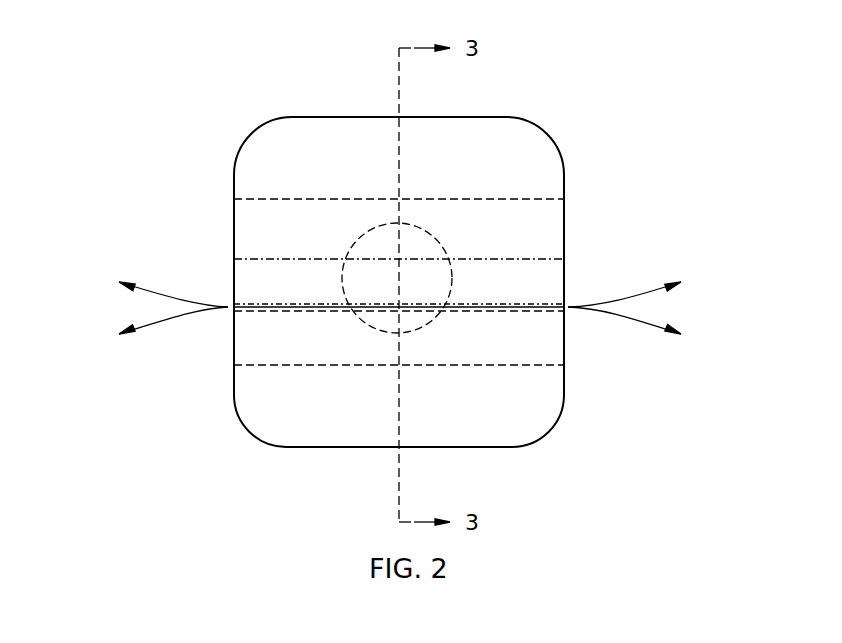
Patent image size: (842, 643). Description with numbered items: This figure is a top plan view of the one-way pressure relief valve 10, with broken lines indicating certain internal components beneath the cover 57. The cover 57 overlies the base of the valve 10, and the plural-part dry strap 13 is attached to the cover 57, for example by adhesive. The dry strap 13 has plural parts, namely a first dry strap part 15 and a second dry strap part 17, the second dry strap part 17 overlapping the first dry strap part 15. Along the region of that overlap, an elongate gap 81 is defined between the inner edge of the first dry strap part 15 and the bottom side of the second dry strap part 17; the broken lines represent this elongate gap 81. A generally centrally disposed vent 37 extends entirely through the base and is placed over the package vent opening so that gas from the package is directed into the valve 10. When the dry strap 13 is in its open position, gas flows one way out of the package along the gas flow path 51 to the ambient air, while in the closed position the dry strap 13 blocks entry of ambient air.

The one-way pressure relief valve 10 is at (326, 247).
The plural-part dry strap 13 is at (226, 197).
The first dry strap part 15 is at (591, 226).
The second dry strap part 17 is at (574, 352).
The vent 37 is at (486, 225).
The gas flow path 51 is at (398, 302).
The cover 57 is at (317, 140).
The elongate gap 81 is at (372, 369).